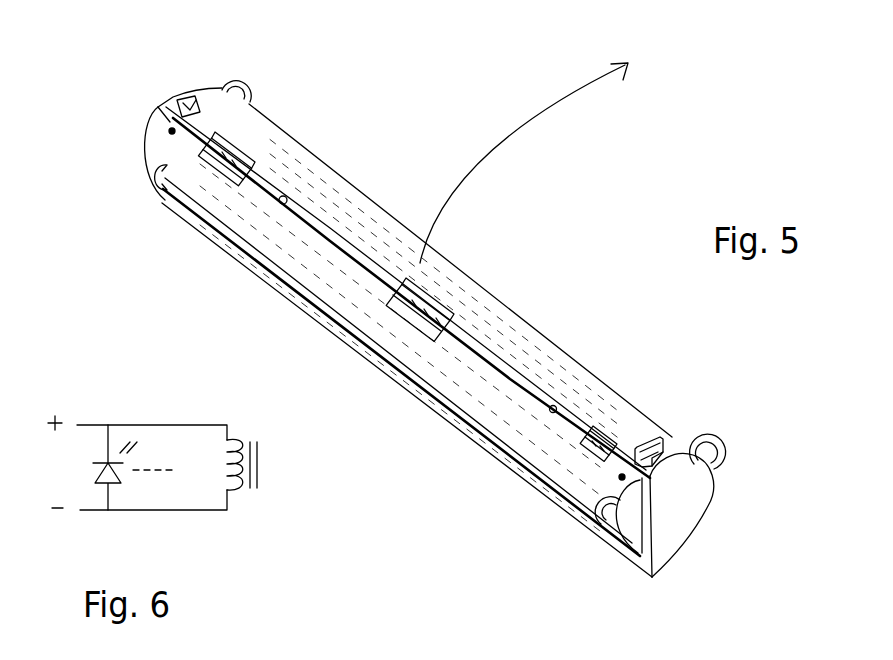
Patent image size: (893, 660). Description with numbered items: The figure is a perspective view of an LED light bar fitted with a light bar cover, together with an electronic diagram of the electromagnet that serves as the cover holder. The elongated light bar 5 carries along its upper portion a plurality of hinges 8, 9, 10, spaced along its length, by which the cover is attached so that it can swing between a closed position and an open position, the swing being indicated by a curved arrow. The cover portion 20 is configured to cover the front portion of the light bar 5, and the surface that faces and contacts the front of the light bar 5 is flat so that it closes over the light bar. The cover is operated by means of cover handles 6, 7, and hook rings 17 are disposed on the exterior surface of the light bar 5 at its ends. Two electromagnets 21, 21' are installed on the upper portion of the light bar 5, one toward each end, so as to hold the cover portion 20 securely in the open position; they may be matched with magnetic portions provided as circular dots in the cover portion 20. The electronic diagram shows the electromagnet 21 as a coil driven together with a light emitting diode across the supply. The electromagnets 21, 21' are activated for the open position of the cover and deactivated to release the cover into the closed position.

In FIG. 5, the light bar 5 is at (705, 508).
In FIG. 5, the cover handle 6 is at (150, 177).
In FIG. 5, the cover handle 7 is at (524, 343).
In FIG. 5, the hinge 8 is at (604, 440).
In FIG. 5, the hinge 9 is at (230, 168).
In FIG. 5, the hinge 10 is at (423, 303).
In FIG. 5, the hook ring 17 is at (236, 78).
In FIG. 5, the cover portion 20 is at (307, 258).
In FIG. 5, the electromagnet 21 is at (667, 390).
In FIG. 6, the electromagnet 21 is at (194, 471).
In FIG. 5, the electromagnet 21' is at (134, 89).